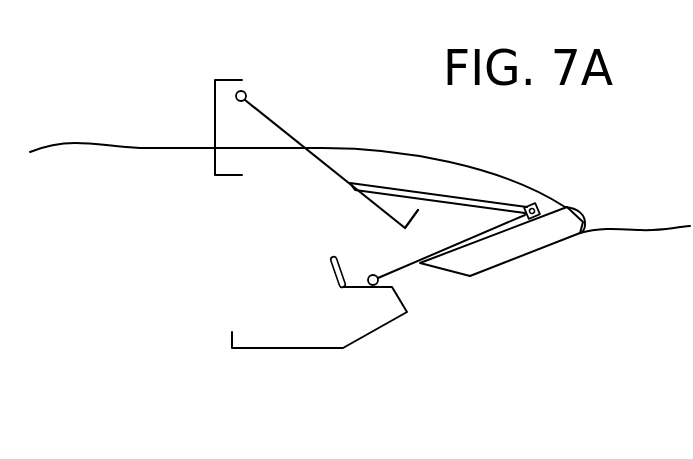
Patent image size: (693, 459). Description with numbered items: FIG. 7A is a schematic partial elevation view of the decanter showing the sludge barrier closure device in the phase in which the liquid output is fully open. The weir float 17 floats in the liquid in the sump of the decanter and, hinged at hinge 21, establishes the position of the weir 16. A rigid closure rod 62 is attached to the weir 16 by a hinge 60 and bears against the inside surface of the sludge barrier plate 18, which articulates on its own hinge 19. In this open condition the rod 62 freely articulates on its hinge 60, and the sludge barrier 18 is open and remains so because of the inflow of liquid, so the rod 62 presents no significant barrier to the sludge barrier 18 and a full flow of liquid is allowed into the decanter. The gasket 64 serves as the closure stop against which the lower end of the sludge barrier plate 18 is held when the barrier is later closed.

The weir 16 is at (565, 207).
The weir float 17 is at (533, 240).
The sludge barrier plate 18 is at (295, 137).
The hinge 19 is at (245, 92).
The hinge 21 is at (374, 273).
The hinge 60 is at (538, 202).
The closure rod 62 is at (462, 198).
The gasket 64 is at (358, 262).